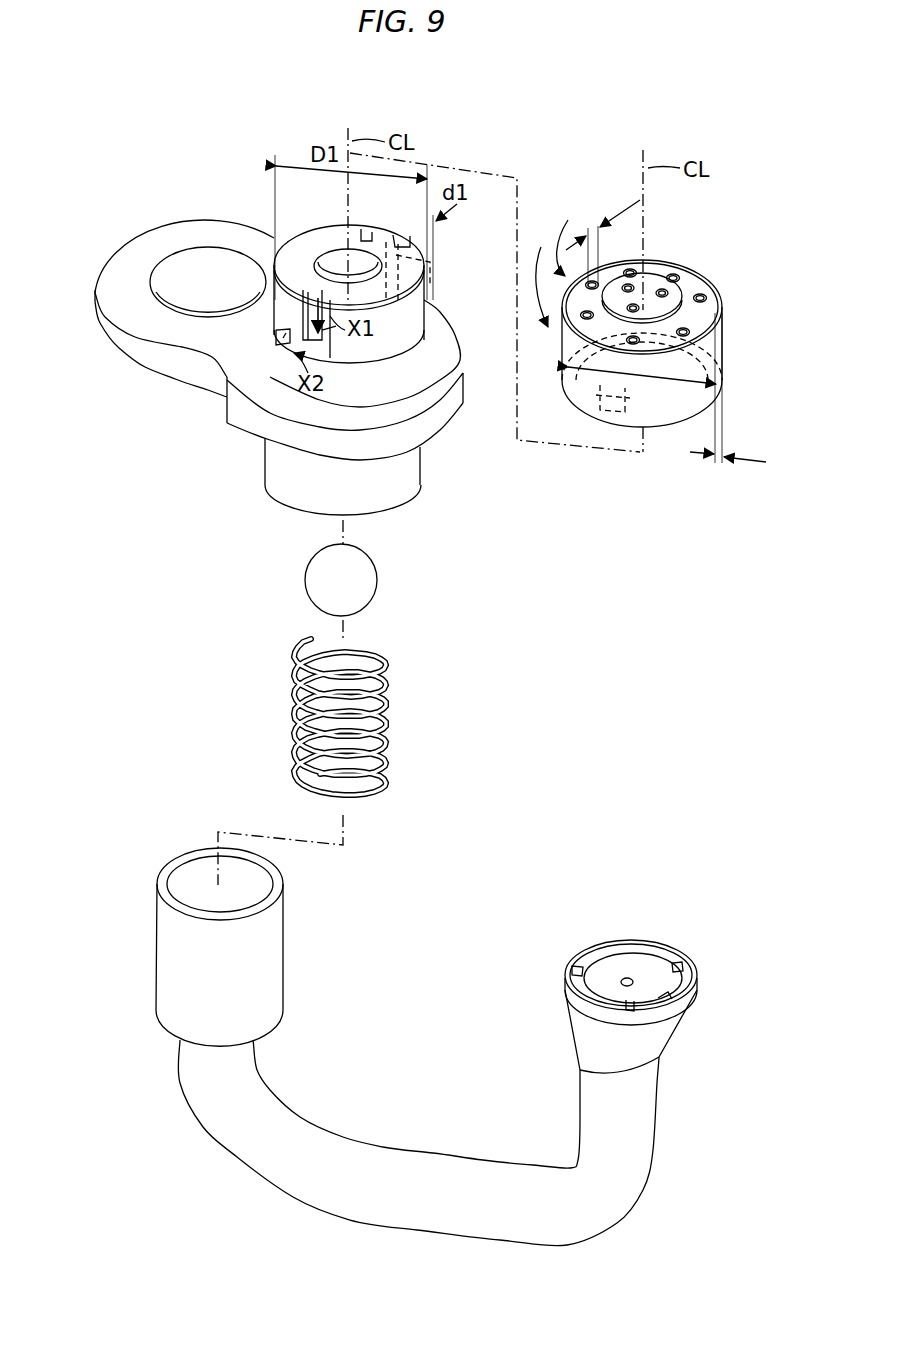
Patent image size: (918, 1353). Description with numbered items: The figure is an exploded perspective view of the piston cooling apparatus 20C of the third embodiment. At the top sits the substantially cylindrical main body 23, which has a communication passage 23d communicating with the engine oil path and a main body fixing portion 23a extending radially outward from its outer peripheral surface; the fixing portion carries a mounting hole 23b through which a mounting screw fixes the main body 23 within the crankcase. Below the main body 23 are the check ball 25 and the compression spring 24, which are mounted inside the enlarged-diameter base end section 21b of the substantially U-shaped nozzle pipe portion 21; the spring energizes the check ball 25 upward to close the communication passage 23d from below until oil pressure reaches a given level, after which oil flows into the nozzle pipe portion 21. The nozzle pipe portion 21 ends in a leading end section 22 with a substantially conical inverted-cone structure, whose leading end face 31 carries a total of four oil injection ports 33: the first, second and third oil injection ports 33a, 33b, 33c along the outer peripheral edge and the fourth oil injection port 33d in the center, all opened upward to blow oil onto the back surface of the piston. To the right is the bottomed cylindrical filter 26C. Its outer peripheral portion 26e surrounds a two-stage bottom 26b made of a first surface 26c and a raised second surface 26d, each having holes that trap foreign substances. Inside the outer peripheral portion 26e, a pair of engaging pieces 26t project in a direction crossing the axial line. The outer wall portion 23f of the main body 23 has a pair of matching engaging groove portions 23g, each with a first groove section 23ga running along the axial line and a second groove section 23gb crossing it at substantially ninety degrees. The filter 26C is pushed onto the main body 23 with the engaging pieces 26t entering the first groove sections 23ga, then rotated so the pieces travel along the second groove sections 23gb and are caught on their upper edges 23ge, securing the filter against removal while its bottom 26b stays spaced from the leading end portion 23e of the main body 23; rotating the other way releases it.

The piston cooling apparatus 20C is at (174, 593).
The nozzle pipe portion 21 is at (432, 1150).
The base end section 21b is at (283, 961).
The leading end section 22 is at (594, 941).
The main body 23 is at (281, 235).
The main body fixing portion 23a is at (163, 235).
The mounting hole 23b is at (203, 265).
The communication passage 23d is at (336, 262).
The leading end portion 23e is at (421, 398).
The outer wall portion 23f is at (438, 346).
The engaging groove portion 23g is at (313, 291).
The first groove section 23ga is at (410, 250).
The second groove section 23gb is at (410, 288).
The upper edge 23ge is at (267, 344).
The compression spring 24 is at (387, 697).
The check ball 25 is at (370, 580).
The filter 26C is at (757, 312).
The bottom 26b is at (765, 232).
The first surface 26c is at (702, 283).
The second surface 26d is at (653, 283).
The outer peripheral portion 26e is at (726, 367).
The engaging piece 26t is at (714, 307).
The leading end face 31 is at (641, 962).
The oil injection ports 33 is at (768, 940).
The first oil injection port 33a is at (674, 991).
The second oil injection port 33b is at (683, 968).
The third oil injection port 33c is at (655, 992).
The fourth oil injection port 33d is at (630, 981).